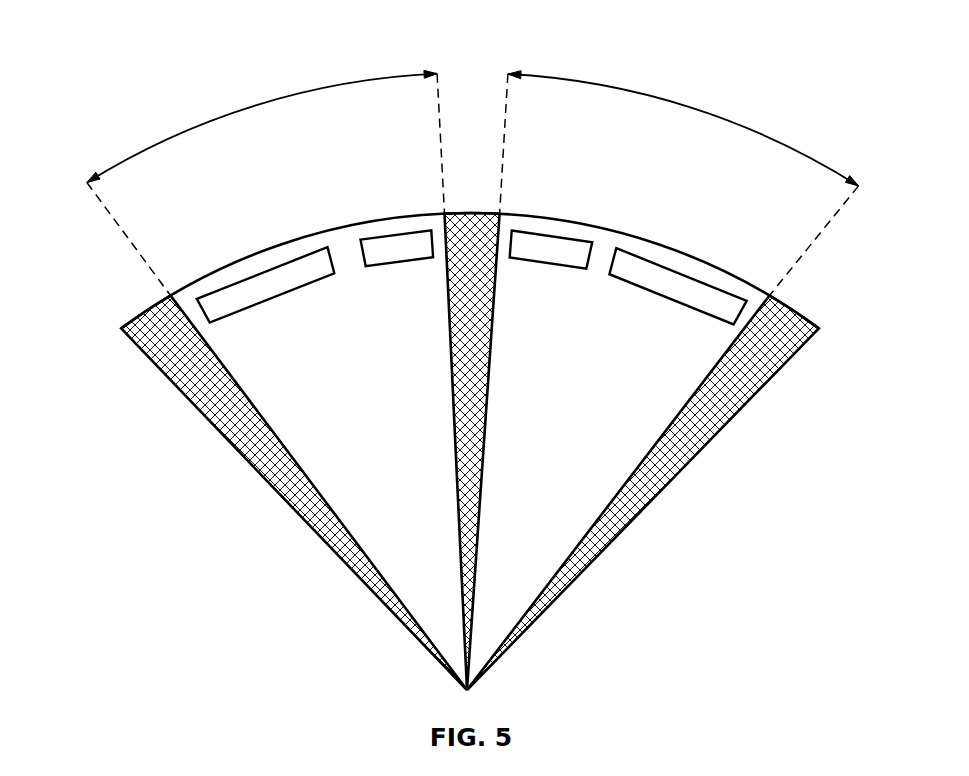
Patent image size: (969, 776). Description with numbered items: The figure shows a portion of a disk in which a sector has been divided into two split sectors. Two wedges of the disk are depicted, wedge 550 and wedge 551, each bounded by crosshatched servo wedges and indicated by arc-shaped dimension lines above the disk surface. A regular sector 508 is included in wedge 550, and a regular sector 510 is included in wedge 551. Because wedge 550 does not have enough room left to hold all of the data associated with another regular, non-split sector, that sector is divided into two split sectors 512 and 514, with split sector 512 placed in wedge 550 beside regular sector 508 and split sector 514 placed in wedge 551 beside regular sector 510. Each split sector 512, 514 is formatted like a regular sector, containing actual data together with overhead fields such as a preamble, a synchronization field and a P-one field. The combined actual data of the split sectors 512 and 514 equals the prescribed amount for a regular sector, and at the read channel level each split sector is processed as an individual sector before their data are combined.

The regular sector 508 is at (253, 269).
The regular sector 510 is at (683, 268).
The split sector 512 is at (397, 233).
The split sector 514 is at (553, 233).
The wedge 550 is at (256, 106).
The wedge 551 is at (690, 109).